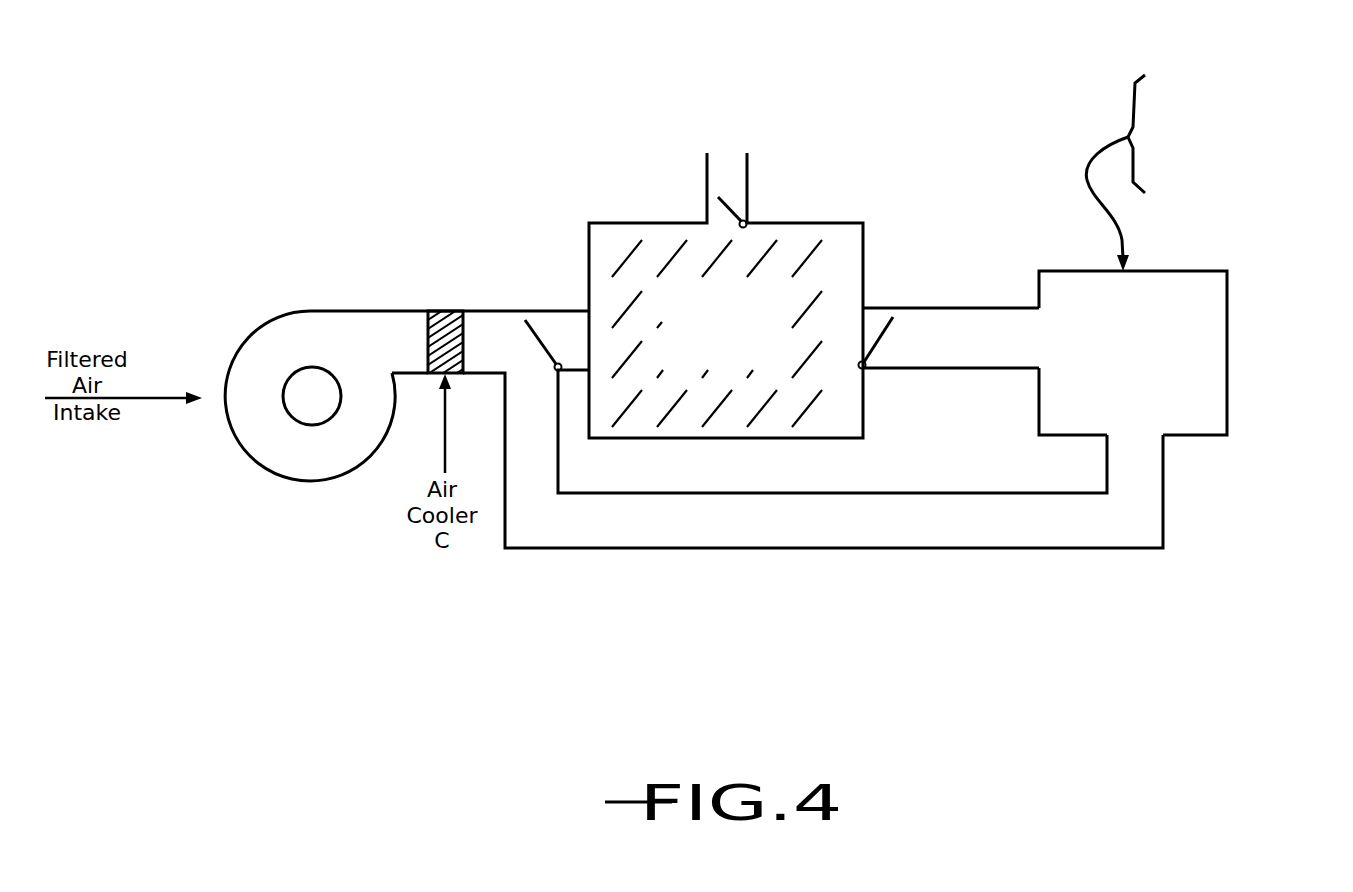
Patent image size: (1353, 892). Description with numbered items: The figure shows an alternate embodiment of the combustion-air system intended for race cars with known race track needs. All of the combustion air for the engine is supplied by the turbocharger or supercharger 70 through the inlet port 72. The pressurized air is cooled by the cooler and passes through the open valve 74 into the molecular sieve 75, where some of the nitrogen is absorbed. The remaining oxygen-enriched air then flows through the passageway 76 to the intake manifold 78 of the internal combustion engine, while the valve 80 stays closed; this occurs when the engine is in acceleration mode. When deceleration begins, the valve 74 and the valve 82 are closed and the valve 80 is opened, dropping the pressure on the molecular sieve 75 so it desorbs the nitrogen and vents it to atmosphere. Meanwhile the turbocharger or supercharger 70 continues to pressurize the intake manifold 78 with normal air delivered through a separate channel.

The turbocharger or supercharger 70 is at (317, 482).
The inlet port 72 is at (478, 311).
The valve 74 is at (542, 332).
The molecular sieve 75 is at (800, 223).
The passageway 76 is at (972, 308).
The intake manifold 78 is at (1148, 351).
The valve 80 is at (730, 203).
The valve 82 is at (882, 342).